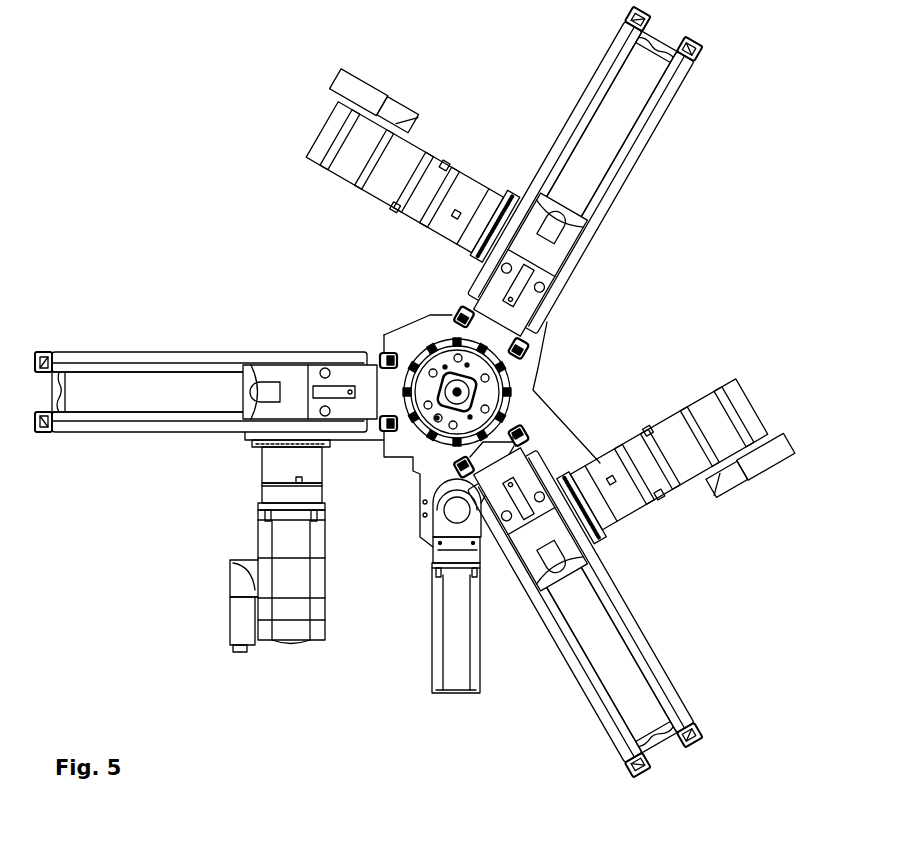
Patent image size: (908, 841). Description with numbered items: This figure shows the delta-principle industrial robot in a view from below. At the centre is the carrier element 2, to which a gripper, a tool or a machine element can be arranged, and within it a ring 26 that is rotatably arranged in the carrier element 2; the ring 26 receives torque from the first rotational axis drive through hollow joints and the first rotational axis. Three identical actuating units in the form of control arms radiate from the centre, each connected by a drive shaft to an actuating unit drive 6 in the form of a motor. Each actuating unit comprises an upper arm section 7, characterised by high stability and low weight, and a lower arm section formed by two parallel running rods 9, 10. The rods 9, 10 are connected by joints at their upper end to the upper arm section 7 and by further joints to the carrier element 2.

The carrier element 2 is at (528, 350).
The ring 26 is at (483, 390).
The actuating unit drive 6 is at (748, 412).
The upper arm section 7 is at (620, 681).
The rod 9 is at (580, 683).
The rod 10 is at (633, 626).